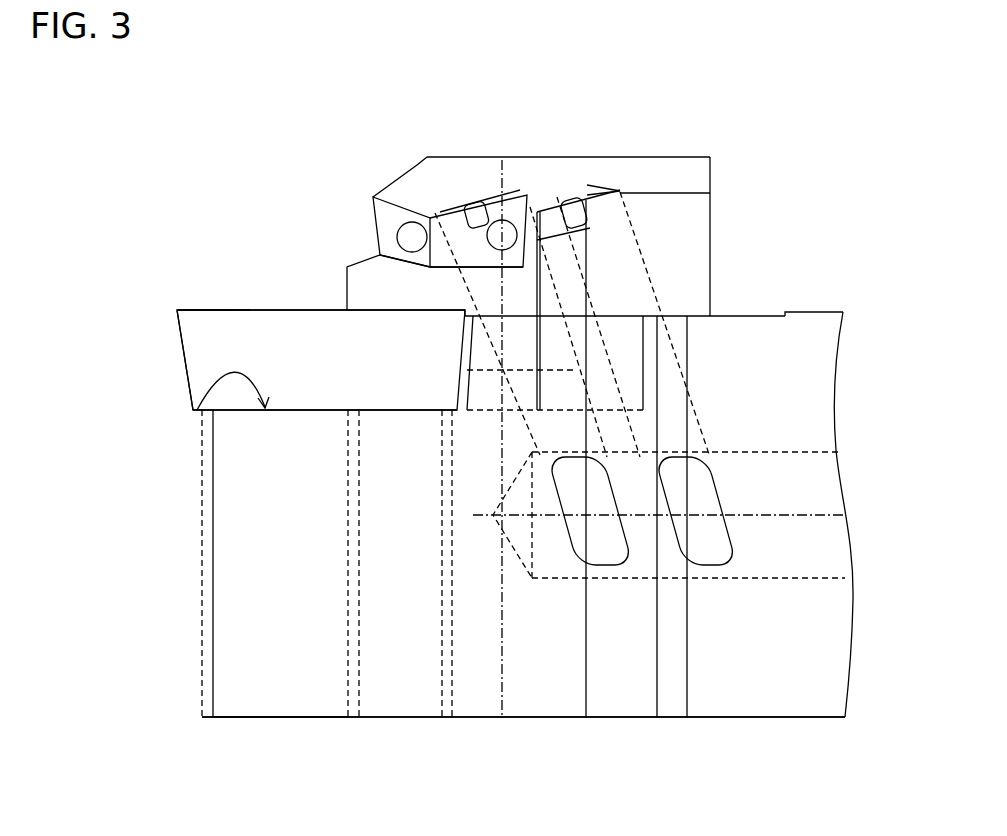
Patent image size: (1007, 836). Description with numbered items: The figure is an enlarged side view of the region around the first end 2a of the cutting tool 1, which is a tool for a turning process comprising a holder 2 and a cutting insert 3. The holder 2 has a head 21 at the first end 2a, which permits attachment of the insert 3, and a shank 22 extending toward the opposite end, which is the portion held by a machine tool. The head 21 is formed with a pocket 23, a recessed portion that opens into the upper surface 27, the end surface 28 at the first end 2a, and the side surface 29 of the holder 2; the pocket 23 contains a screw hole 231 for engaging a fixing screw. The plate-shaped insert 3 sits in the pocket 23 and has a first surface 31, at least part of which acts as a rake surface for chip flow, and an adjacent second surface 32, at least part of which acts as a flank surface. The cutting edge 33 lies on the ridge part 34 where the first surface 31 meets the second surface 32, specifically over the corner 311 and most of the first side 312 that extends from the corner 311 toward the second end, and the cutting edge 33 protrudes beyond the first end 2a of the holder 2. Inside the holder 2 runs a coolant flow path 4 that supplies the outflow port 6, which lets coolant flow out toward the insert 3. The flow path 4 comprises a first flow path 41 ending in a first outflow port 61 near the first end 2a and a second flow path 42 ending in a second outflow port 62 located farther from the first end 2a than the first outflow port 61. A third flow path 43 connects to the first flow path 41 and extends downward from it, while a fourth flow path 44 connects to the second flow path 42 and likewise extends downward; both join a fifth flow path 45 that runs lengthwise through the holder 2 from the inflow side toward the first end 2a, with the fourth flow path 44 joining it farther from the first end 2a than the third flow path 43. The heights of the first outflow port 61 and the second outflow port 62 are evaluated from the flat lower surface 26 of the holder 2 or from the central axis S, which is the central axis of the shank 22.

The cutting tool 1 is at (878, 135).
The holder 2 is at (712, 157).
The first end 2a is at (202, 635).
The cutting insert 3 is at (177, 342).
The flow path 4 is at (606, 406).
The outflow port 6 is at (423, 393).
The head 21 is at (668, 157).
The shank 22 is at (800, 312).
The pocket 23 is at (197, 410).
The lower surface 26 is at (544, 720).
The upper surface 27 is at (828, 312).
The end surface 28 is at (202, 590).
The side surface 29 is at (275, 697).
The first surface 31 is at (252, 308).
The second surface 32 is at (202, 365).
The cutting edge 33 is at (203, 307).
The ridge part 34 is at (203, 307).
The first flow path 41 is at (468, 203).
The second flow path 42 is at (558, 198).
The third flow path 43 is at (490, 293).
The fourth flow path 44 is at (640, 250).
The fifth flow path 45 is at (788, 450).
The first outflow port 61 is at (400, 222).
The second outflow port 62 is at (495, 312).
The screw hole 231 is at (402, 688).
The corner 311 is at (173, 307).
The first side 312 is at (223, 307).
The central axis S is at (800, 513).